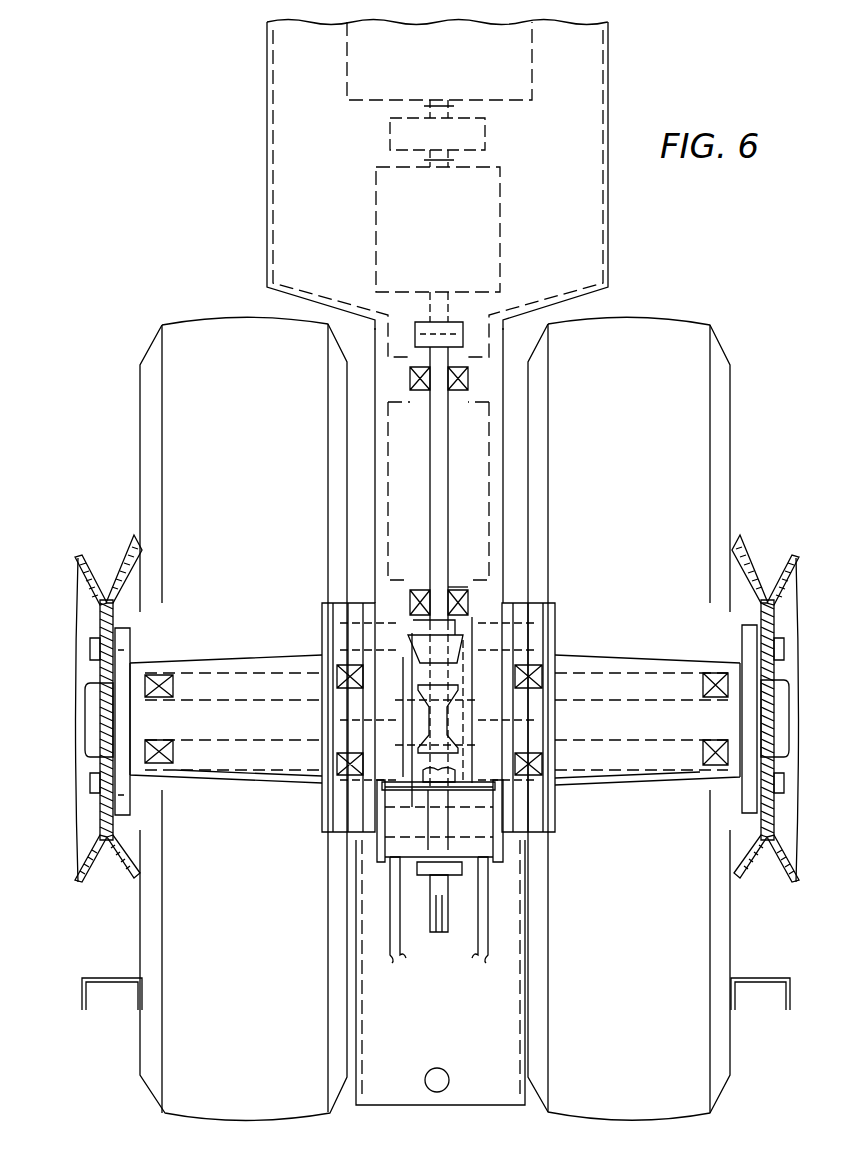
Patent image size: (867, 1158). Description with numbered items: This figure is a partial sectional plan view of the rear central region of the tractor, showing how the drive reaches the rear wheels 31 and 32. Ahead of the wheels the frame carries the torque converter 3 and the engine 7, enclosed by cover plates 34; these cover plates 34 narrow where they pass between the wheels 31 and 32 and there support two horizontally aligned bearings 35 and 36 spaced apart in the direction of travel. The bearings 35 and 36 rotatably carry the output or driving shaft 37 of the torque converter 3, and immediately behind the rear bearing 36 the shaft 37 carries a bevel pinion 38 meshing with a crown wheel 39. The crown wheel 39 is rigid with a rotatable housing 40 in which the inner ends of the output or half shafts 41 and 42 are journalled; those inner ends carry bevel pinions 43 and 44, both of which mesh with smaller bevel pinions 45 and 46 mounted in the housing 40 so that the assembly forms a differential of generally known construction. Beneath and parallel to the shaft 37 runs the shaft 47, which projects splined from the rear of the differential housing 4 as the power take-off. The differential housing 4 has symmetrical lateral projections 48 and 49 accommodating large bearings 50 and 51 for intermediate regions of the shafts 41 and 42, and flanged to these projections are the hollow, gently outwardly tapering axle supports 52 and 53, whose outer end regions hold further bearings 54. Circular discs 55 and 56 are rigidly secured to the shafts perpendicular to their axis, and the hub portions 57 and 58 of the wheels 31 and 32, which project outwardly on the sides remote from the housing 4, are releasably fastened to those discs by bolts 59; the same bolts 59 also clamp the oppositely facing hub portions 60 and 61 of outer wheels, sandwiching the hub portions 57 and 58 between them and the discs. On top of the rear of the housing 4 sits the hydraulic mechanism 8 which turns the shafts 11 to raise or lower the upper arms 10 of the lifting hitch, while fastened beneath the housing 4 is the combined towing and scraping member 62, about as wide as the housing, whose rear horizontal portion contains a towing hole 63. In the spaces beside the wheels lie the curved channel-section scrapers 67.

The torque converter 3 is at (505, 178).
The differential housing 4 is at (380, 570).
The engine 7 is at (532, 60).
The hydraulic mechanism 8 is at (468, 875).
The upper arms 10 is at (450, 920).
The shafts 11 is at (372, 838).
The rear wheel 31 is at (142, 1068).
The rear wheel 32 is at (728, 1068).
The cover plates 34 is at (268, 188).
The bearing 35 is at (473, 388).
The bearing 36 is at (456, 592).
The output or driving shaft 37 is at (430, 522).
The bevel pinion 38 is at (468, 612).
The crown wheel 39 is at (410, 612).
The rotatable housing 40 is at (465, 683).
The output or half shaft 41 is at (236, 740).
The output or half shaft 42 is at (632, 742).
The bevel pinion 43 is at (420, 725).
The bevel pinion 44 is at (462, 722).
The smaller bevel pinion 45 is at (463, 635).
The smaller bevel pinion 46 is at (456, 772).
The power take-off shaft 47 is at (440, 935).
The lateral projection 48 is at (324, 603).
The lateral projection 49 is at (545, 603).
The bearing 50 is at (338, 660).
The bearing 51 is at (542, 660).
The axle support 52 is at (262, 785).
The axle support 53 is at (610, 780).
The bearings 54 is at (165, 770).
The circular disc 55 is at (132, 635).
The circular disc 56 is at (742, 632).
The hub portion 57 is at (130, 565).
The hub portion 58 is at (745, 565).
The bolts 59 is at (770, 757).
The hub portion 60 is at (80, 876).
The hub portion 61 is at (777, 880).
The combined towing and scraping member 62 is at (375, 1028).
The hole 63 is at (447, 1072).
The scrapers 67 is at (116, 978).